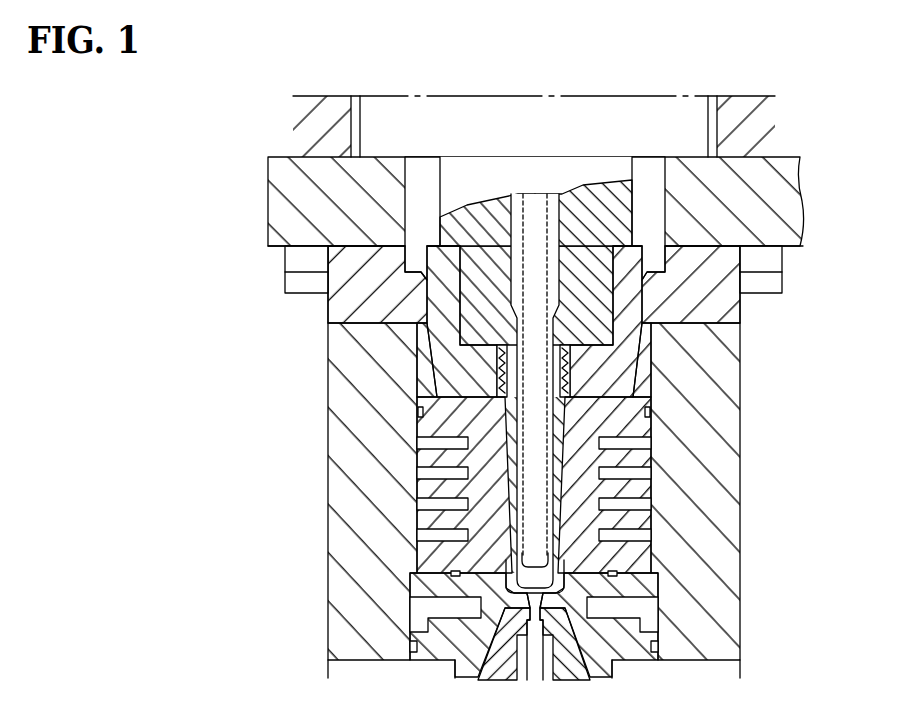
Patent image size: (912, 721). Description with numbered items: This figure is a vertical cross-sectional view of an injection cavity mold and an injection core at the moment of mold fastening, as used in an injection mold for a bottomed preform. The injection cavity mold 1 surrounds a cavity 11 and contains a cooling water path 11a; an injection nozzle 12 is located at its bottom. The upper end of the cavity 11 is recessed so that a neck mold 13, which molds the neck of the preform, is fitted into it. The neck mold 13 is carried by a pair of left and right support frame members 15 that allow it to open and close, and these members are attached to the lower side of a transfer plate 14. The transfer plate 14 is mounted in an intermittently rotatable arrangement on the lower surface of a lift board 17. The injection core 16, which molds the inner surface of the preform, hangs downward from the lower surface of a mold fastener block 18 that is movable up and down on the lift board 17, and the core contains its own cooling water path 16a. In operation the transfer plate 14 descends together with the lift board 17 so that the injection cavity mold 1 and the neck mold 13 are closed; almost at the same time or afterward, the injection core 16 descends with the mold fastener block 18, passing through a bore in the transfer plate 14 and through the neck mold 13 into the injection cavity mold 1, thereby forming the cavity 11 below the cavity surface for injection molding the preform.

The injection cavity mold 1 is at (326, 443).
The cavity 11 is at (507, 543).
The cooling water path 11a is at (633, 535).
The injection nozzle 12 is at (513, 625).
The neck mold 13 is at (613, 363).
The transfer plate 14 is at (760, 210).
The support frame members 15 is at (710, 302).
The injection core 16 is at (553, 457).
The cooling water path 16a is at (537, 490).
The lift board 17 is at (740, 117).
The mold fastener block 18 is at (383, 127).